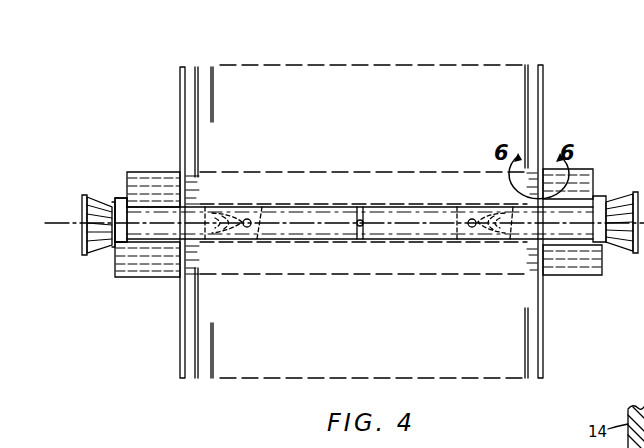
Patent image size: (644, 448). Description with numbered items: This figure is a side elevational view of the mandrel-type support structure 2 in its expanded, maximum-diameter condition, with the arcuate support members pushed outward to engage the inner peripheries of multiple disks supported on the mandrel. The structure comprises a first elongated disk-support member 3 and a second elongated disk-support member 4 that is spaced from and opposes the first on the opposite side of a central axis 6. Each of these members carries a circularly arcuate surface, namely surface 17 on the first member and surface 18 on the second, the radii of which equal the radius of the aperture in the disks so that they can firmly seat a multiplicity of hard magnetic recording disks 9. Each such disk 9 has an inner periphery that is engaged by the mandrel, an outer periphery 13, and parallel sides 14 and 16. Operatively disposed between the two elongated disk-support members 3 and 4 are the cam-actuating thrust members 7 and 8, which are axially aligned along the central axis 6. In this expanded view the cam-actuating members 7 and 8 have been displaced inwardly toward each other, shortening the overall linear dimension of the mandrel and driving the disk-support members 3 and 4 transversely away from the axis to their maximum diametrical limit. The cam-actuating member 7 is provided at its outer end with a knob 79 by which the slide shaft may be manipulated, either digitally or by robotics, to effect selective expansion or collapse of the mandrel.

The mandrel-type support structure 2 is at (587, 160).
The first elongated disk-support member 3 is at (160, 185).
The second elongated disk-support member 4 is at (140, 268).
The central axis 6 is at (64, 223).
The cam-actuating thrust member 7 is at (100, 262).
The cam-actuating thrust member 8 is at (614, 262).
The hard magnetic recording disk 9 is at (178, 97).
The outer periphery 13 is at (187, 66).
The parallel side 14 is at (182, 350).
The parallel side 16 is at (186, 372).
The circularly arcuate surface 17 is at (560, 184).
The circularly arcuate surface 18 is at (564, 260).
The knob 79 is at (104, 203).